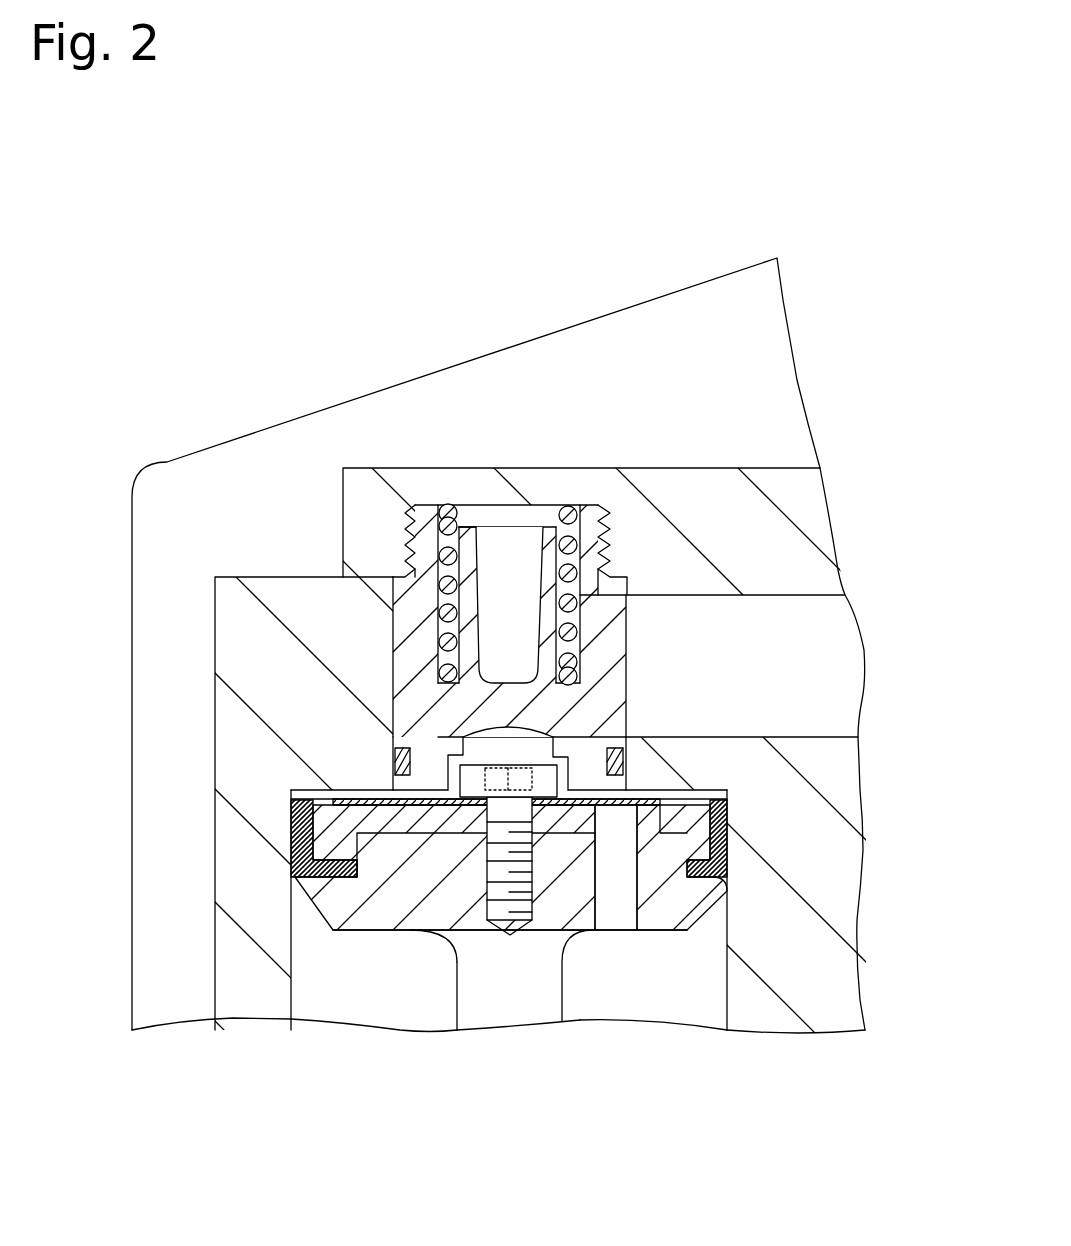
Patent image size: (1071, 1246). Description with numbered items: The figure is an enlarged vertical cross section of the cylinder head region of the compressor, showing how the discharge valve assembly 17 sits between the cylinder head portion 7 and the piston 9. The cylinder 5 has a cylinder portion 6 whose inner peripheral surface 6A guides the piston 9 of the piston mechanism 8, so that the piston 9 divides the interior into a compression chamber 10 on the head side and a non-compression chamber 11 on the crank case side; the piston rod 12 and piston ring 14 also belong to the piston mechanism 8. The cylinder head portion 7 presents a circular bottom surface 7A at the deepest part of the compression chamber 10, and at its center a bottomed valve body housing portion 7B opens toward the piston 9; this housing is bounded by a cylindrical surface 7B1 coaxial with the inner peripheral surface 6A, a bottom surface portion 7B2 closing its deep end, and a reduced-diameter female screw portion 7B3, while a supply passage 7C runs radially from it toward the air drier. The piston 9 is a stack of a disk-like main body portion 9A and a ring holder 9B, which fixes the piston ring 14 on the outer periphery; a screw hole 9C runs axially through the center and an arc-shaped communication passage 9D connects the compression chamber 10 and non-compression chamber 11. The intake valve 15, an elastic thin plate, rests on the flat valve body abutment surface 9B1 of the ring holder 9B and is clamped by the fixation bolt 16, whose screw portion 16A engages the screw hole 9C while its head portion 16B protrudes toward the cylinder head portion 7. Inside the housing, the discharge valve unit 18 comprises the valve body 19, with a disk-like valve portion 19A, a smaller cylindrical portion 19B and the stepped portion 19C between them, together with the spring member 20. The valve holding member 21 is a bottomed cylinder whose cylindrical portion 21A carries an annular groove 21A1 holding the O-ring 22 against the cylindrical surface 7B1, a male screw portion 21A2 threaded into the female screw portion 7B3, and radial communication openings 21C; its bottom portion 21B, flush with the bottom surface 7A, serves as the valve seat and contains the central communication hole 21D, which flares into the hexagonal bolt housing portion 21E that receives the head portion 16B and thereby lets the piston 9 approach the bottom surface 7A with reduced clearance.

The cylinder 5 is at (268, 418).
The cylinder portion 6 is at (244, 995).
The inner peripheral surface 6A is at (292, 977).
The cylinder head portion 7 is at (753, 490).
The bottom surface 7A is at (707, 827).
The valve body housing portion 7B is at (412, 620).
The cylindrical surface 7B1 is at (425, 708).
The bottom surface portion 7B2 is at (523, 505).
The female screw portion 7B3 is at (436, 520).
The supply passage 7C is at (810, 657).
The piston mechanism 8 is at (468, 1040).
The piston 9 is at (382, 912).
The main body portion 9A is at (408, 917).
The ring holder 9B is at (357, 833).
The valve body abutment surface 9B1 is at (300, 790).
The screw hole 9C is at (517, 900).
The communication passage 9D is at (613, 907).
The compression chamber 10 is at (455, 780).
The non-compression chamber 11 is at (660, 992).
The piston rod 12 is at (528, 1010).
The piston ring 14 is at (727, 851).
The intake valve 15 is at (340, 800).
The fixation bolt 16 is at (487, 872).
The screw portion 16A is at (527, 897).
The head portion 16B is at (542, 780).
The discharge valve assembly 17 is at (390, 515).
The discharge valve unit 18 is at (538, 512).
The valve body 19 is at (438, 665).
The valve portion 19A is at (400, 745).
The cylindrical portion 19B is at (573, 570).
The stepped portion 19C is at (553, 735).
The spring member 20 is at (433, 573).
The valve holding member 21 is at (435, 685).
The cylindrical portion 21A is at (417, 608).
The annular groove 21A1 is at (627, 765).
The male screw portion 21A2 is at (615, 530).
The bottom portion 21B is at (570, 753).
The communication openings 21C is at (605, 598).
The communication hole 21D is at (525, 747).
The bolt housing portion 21E is at (300, 862).
The O-ring 22 is at (625, 772).